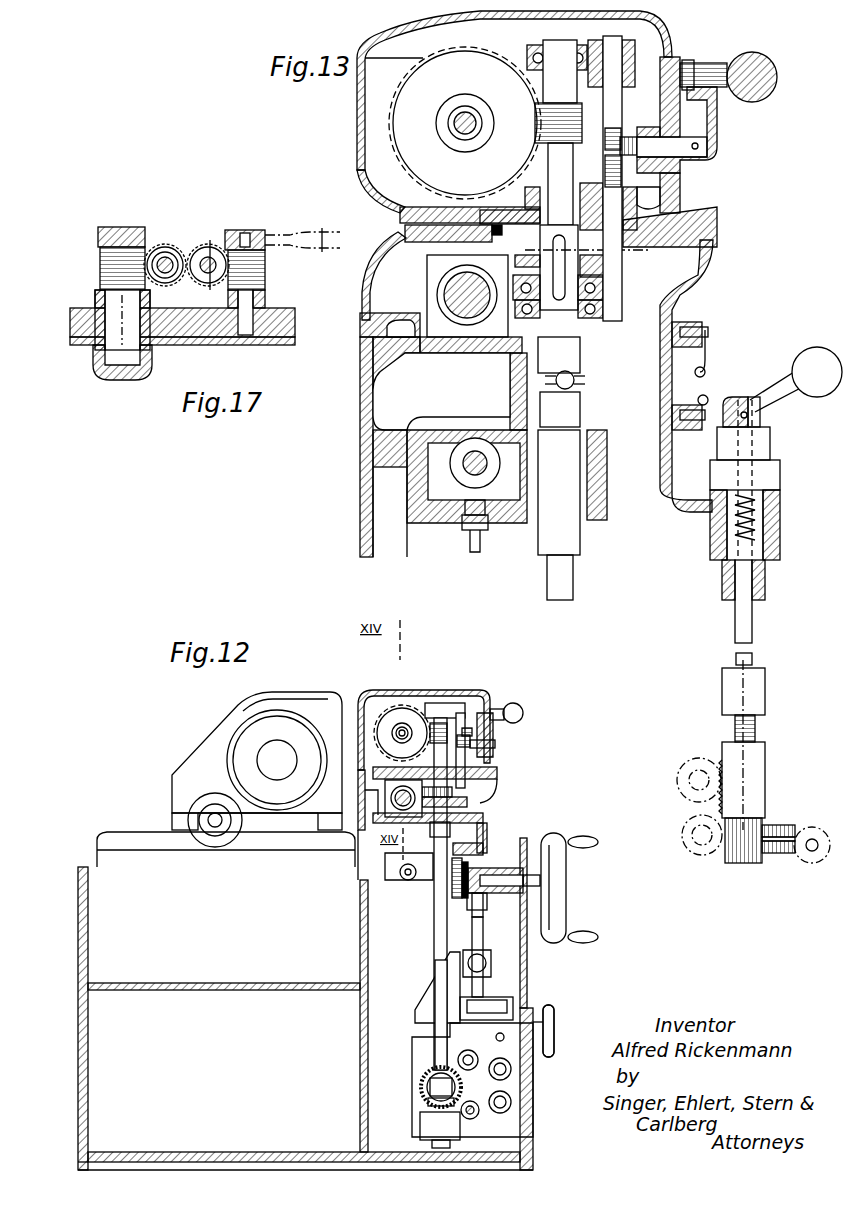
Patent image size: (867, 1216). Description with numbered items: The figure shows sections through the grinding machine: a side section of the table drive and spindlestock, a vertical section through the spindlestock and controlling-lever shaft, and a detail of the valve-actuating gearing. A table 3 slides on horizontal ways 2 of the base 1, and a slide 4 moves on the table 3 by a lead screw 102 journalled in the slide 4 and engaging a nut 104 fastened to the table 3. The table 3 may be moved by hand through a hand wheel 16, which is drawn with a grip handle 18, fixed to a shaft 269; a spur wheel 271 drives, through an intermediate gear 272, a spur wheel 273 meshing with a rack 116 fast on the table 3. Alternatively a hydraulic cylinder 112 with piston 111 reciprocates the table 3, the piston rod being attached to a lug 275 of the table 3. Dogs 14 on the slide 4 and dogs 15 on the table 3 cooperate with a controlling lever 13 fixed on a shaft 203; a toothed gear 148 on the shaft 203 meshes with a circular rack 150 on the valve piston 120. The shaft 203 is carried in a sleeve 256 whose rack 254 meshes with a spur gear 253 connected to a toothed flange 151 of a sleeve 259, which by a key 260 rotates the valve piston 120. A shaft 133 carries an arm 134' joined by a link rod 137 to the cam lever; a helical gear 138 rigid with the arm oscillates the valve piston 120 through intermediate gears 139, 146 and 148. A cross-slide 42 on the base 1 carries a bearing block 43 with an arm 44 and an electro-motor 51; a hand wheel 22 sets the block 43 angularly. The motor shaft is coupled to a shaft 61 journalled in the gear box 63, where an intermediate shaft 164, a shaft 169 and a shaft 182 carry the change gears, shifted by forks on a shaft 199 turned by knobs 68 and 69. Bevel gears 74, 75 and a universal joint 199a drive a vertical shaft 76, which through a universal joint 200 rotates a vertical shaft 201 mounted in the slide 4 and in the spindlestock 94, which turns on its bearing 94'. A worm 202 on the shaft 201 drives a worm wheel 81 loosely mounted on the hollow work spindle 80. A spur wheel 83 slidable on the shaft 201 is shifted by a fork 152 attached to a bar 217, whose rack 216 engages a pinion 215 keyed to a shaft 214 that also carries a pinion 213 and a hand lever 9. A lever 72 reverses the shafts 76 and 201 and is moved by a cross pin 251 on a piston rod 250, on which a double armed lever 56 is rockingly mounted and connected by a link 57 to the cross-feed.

In FIG. 13, the base 1 is at (372, 518).
In FIG. 17, the base 1 is at (268, 330).
In FIG. 12, the base 1 is at (80, 1095).
In FIG. 13, the horizontal ways 2 is at (372, 440).
In FIG. 12, the horizontal ways 2 is at (366, 829).
In FIG. 13, the table 3 is at (372, 387).
In FIG. 12, the table 3 is at (484, 836).
In FIG. 13, the slide 4 is at (370, 283).
In FIG. 12, the slide 4 is at (500, 789).
In FIG. 13, the hand lever 9 is at (718, 122).
In FIG. 12, the hand lever 9 is at (503, 706).
In FIG. 13, the controlling lever 13 is at (712, 404).
In FIG. 13, the dogs 14 is at (706, 372).
In FIG. 13, the dogs 15 is at (700, 398).
In FIG. 12, the hand wheel 16 is at (562, 894).
In FIG. 12, the handle 18 is at (565, 916).
In FIG. 12, the hand wheel 22 is at (214, 848).
In FIG. 12, the cross-slide 42 is at (150, 838).
In FIG. 12, the bearing block 43 is at (186, 760).
In FIG. 12, the arm 44 is at (302, 706).
In FIG. 12, the electro-motor 51 is at (258, 742).
In FIG. 12, the double armed lever 56 is at (484, 945).
In FIG. 12, the link 57 is at (483, 915).
In FIG. 12, the shaft 61 is at (462, 1114).
In FIG. 12, the gear box 63 is at (520, 1128).
In FIG. 12, the knob 68 is at (554, 1030).
In FIG. 12, the knob 69 is at (548, 1031).
In FIG. 12, the lever 72 is at (448, 975).
In FIG. 12, the bevel gear 74 is at (420, 1086).
In FIG. 12, the bevel gear 75 is at (430, 1108).
In FIG. 13, the vertical shaft 76 is at (565, 582).
In FIG. 12, the vertical shaft 76 is at (435, 940).
In FIG. 13, the work spindle 80 is at (463, 115).
In FIG. 12, the work spindle 80 is at (398, 722).
In FIG. 13, the worm wheel 81 is at (402, 160).
In FIG. 12, the worm wheel 81 is at (412, 706).
In FIG. 13, the spur wheel 83 is at (522, 258).
In FIG. 12, the spur wheel 83 is at (490, 814).
In FIG. 13, the spindlestock 94 is at (497, 112).
In FIG. 12, the spindlestock 94 is at (415, 730).
In FIG. 13, the bearing 94' is at (689, 223).
In FIG. 13, the lead screw 102 is at (445, 280).
In FIG. 12, the lead screw 102 is at (388, 790).
In FIG. 13, the nut 104 is at (370, 312).
In FIG. 12, the nut 104 is at (372, 805).
In FIG. 13, the piston 111 is at (462, 450).
In FIG. 13, the hydraulic cylinder 112 is at (485, 436).
In FIG. 12, the rack 116 is at (470, 860).
In FIG. 13, the valve piston 120 is at (688, 822).
In FIG. 17, the valve piston 120 is at (115, 232).
In FIG. 17, the shaft 133 is at (248, 232).
In FIG. 17, the arm 134' is at (302, 227).
In FIG. 17, the link rod 137 is at (322, 251).
In FIG. 13, the helical gear 138 is at (822, 830).
In FIG. 17, the helical gear 138 is at (262, 272).
In FIG. 13, the intermediate gear 139 is at (786, 855).
In FIG. 17, the intermediate gear 139 is at (214, 255).
In FIG. 13, the intermediate gear 146 is at (784, 825).
In FIG. 17, the intermediate gear 146 is at (205, 246).
In FIG. 13, the toothed gear 148 is at (745, 866).
In FIG. 17, the toothed gear 148 is at (168, 286).
In FIG. 13, the circular rack 150 is at (698, 842).
In FIG. 17, the circular rack 150 is at (100, 259).
In FIG. 17, the toothed flange 151 is at (92, 305).
In FIG. 13, the fork 152 is at (630, 262).
In FIG. 12, the fork 152 is at (500, 810).
In FIG. 12, the intermediate shaft 164 is at (508, 1104).
In FIG. 12, the shaft 169 is at (508, 1072).
In FIG. 12, the shaft 182 is at (460, 1058).
In FIG. 12, the shaft 199 is at (505, 1038).
In FIG. 12, the universal joint 199a is at (455, 1085).
In FIG. 13, the universal joint 200 is at (572, 382).
In FIG. 12, the universal joint 200 is at (429, 832).
In FIG. 13, the vertical shaft 201 is at (563, 80).
In FIG. 12, the vertical shaft 201 is at (441, 712).
In FIG. 13, the worm 202 is at (536, 126).
In FIG. 12, the worm 202 is at (455, 730).
In FIG. 13, the shaft 203 is at (738, 636).
In FIG. 17, the shaft 203 is at (164, 256).
In FIG. 13, the pinion 213 is at (620, 150).
In FIG. 12, the pinion 213 is at (510, 734).
In FIG. 13, the shaft 214 is at (712, 147).
In FIG. 12, the shaft 214 is at (510, 746).
In FIG. 13, the pinion 215 is at (612, 140).
In FIG. 12, the pinion 215 is at (508, 718).
In FIG. 13, the rack 216 is at (640, 186).
In FIG. 13, the bar 217 is at (615, 75).
In FIG. 12, the bar 217 is at (492, 762).
In FIG. 12, the piston rod 250 is at (487, 965).
In FIG. 12, the cross pin 251 is at (466, 960).
In FIG. 13, the spur gear 253 is at (695, 760).
In FIG. 13, the rack 254 is at (724, 795).
In FIG. 13, the sleeve 256 is at (768, 750).
In FIG. 17, the sleeve 259 is at (150, 352).
In FIG. 17, the key 260 is at (122, 382).
In FIG. 12, the shaft 269 is at (500, 893).
In FIG. 12, the spur wheel 271 is at (470, 910).
In FIG. 12, the intermediate gear 272 is at (460, 888).
In FIG. 12, the spur wheel 273 is at (452, 880).
In FIG. 12, the lug 275 is at (390, 880).